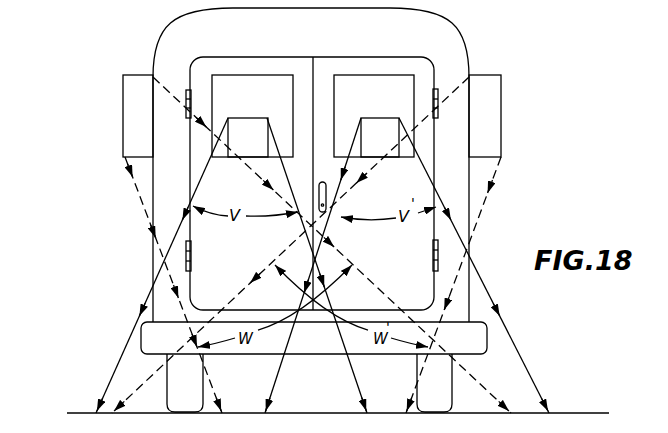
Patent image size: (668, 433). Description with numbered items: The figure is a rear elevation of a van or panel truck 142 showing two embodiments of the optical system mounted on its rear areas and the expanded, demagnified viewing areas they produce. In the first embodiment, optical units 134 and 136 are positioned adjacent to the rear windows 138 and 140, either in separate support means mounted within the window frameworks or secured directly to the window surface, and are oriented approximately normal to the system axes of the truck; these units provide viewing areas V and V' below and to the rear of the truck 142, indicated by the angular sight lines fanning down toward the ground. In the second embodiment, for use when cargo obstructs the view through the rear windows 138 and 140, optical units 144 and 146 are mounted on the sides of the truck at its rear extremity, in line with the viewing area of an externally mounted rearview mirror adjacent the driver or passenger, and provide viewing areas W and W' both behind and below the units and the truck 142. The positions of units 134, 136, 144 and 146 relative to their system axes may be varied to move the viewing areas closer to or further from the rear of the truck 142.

The optical unit 134 is at (262, 142).
The optical unit 136 is at (394, 142).
The rear window 138 is at (268, 102).
The rear window 140 is at (390, 102).
The van or panel truck 142 is at (460, 37).
The optical unit 144 is at (123, 97).
The optical unit 146 is at (502, 96).